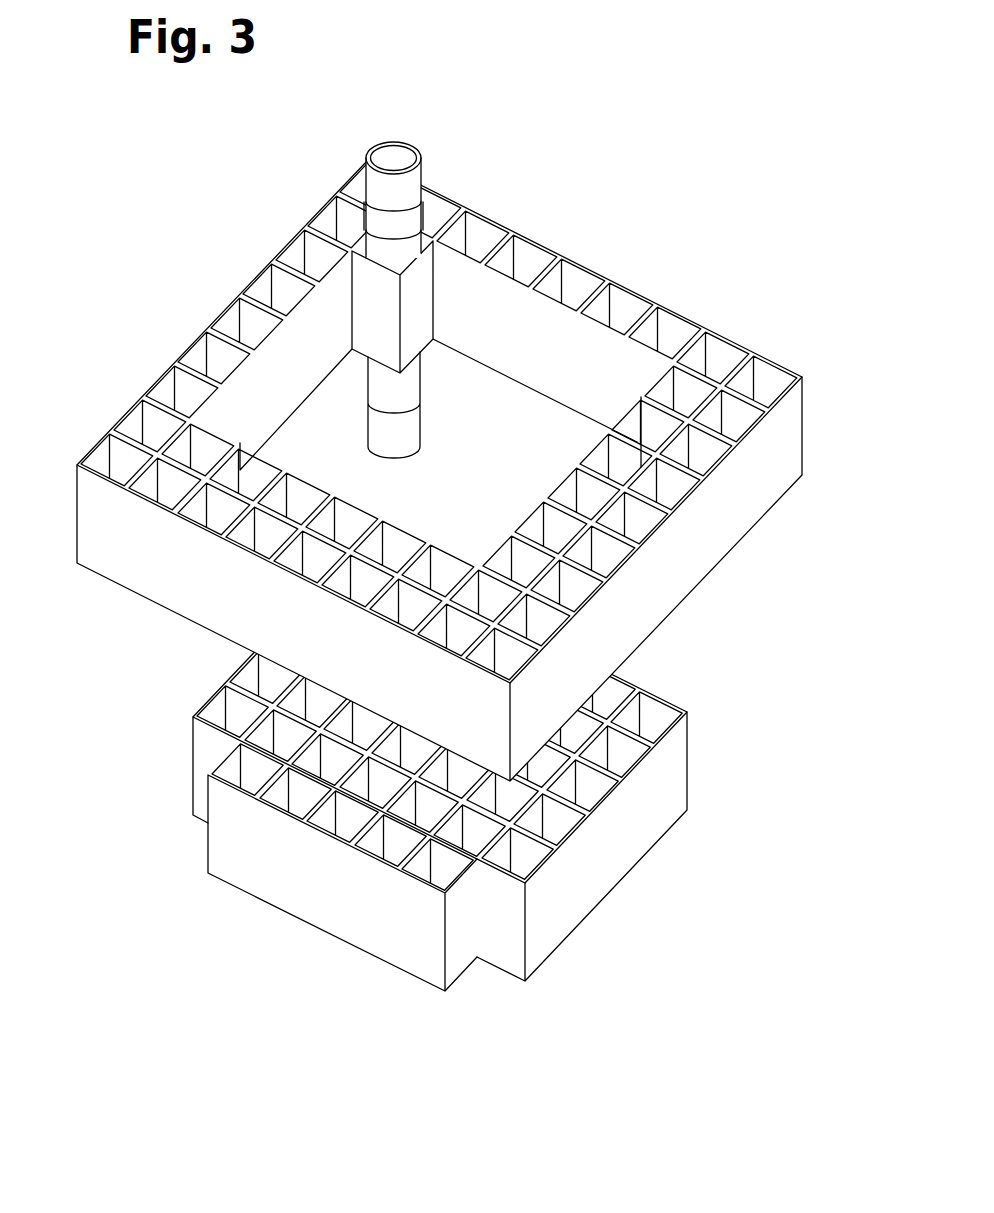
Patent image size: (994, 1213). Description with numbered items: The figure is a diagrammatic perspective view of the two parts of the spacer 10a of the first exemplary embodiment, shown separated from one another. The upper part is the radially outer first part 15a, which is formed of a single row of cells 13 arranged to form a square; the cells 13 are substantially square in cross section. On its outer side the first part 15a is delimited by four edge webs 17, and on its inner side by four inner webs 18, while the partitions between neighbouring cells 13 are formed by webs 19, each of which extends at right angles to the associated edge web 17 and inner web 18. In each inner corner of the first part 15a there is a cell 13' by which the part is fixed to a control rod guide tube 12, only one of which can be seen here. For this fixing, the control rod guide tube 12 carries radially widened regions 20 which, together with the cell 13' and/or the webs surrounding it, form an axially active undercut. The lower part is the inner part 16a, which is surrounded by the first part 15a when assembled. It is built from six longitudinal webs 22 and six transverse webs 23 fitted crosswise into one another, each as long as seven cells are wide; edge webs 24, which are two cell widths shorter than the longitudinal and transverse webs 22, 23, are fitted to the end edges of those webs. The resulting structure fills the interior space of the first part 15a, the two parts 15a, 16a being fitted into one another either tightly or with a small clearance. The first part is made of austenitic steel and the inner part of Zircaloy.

The spacer 10a is at (454, 452).
The control rod guide tube 12 is at (346, 268).
The cell 13 is at (101, 429).
The inner corner cell 13' is at (460, 384).
The first part 15a is at (541, 216).
The inner part 16a is at (444, 791).
The edge web 17 is at (690, 555).
The inner web 18 is at (270, 375).
The web 19 is at (185, 390).
The radially widened region 20 is at (366, 235).
The longitudinal web 22 is at (307, 760).
The transverse web 23 is at (600, 783).
The edge web 24 is at (233, 672).